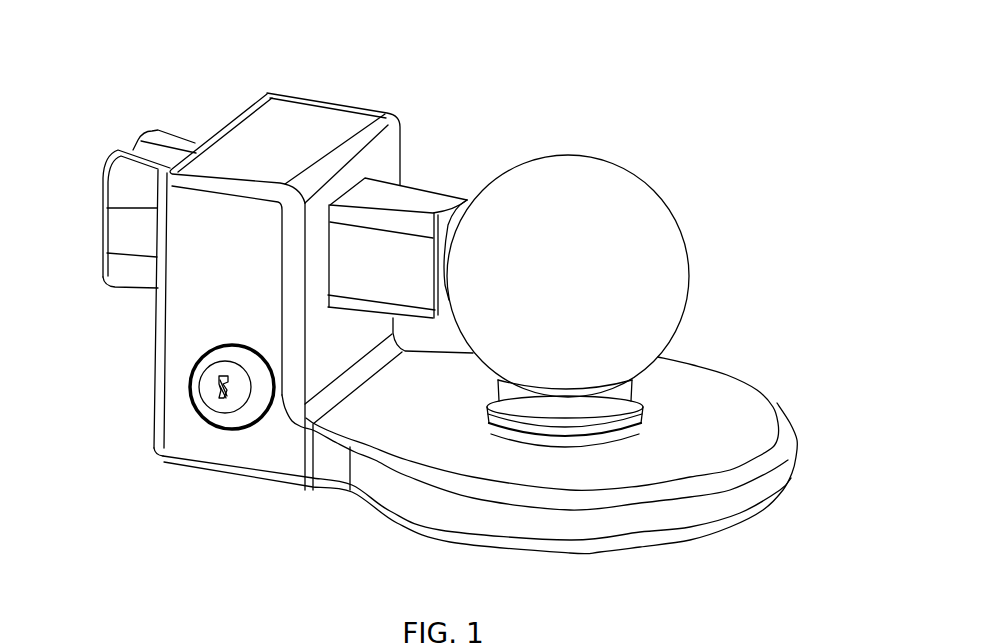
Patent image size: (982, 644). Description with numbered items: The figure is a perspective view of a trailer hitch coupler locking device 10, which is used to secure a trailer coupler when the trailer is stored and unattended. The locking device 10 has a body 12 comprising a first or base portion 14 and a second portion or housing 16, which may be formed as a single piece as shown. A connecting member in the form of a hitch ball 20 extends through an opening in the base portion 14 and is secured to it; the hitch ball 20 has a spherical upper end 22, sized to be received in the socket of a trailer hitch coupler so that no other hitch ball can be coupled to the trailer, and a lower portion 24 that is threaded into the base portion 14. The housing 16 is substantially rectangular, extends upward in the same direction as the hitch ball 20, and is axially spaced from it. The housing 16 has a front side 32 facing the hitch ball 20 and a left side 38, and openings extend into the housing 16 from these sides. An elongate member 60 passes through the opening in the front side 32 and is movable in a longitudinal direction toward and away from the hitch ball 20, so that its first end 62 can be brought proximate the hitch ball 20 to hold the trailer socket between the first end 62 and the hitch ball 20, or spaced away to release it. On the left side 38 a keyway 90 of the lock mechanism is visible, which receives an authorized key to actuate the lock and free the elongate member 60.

The trailer hitch coupler locking device 10 is at (783, 112).
The body 12 is at (350, 505).
The base portion 14 is at (757, 428).
The housing 16 is at (152, 448).
The hitch ball 20 is at (689, 236).
The spherical upper end 22 is at (615, 193).
The lower portion 24 is at (605, 405).
The front side 32 is at (377, 158).
The left side 38 is at (192, 302).
The elongate member 60 is at (437, 195).
The first end 62 is at (460, 205).
The keyway 90 is at (217, 403).